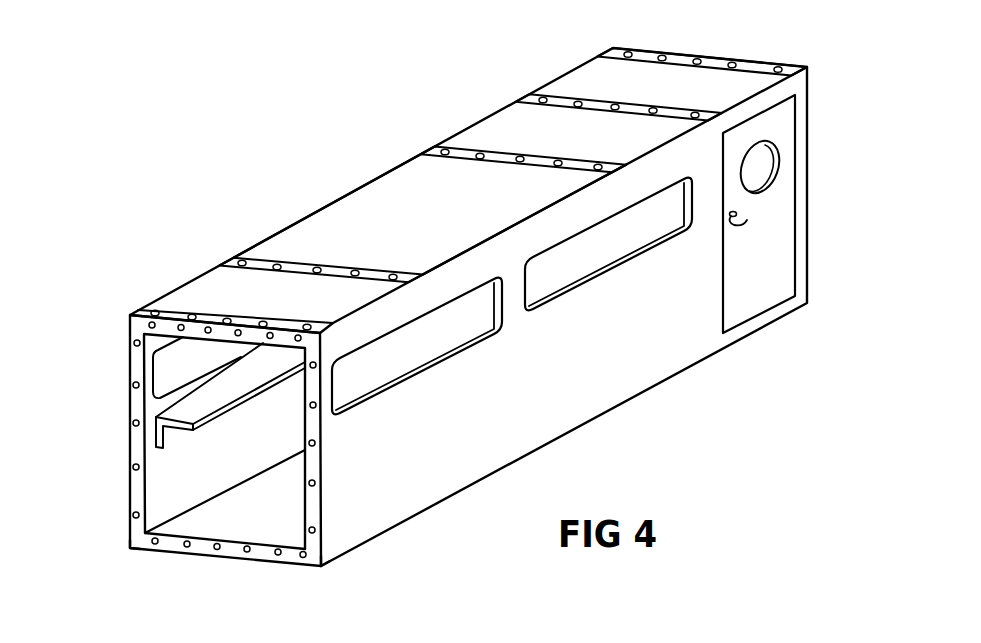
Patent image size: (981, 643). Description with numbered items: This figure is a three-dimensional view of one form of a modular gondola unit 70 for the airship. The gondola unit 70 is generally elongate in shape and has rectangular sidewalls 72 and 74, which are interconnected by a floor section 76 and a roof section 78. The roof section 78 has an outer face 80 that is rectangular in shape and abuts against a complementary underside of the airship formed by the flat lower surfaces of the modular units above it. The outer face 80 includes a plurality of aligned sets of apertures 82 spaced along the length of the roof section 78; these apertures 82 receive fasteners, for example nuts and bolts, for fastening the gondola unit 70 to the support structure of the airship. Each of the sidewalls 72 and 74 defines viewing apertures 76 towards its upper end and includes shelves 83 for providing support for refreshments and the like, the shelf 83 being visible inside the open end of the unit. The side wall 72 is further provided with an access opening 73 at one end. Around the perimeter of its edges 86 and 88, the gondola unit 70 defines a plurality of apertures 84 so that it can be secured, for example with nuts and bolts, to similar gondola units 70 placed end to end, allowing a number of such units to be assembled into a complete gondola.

The modular gondola unit 70 is at (331, 119).
The sidewall 72 is at (453, 465).
The access opening 73 is at (752, 263).
The sidewall 74 is at (153, 473).
The viewing apertures 76 is at (178, 358).
The roof section 78 is at (325, 247).
The outer face 80 is at (410, 182).
The aligned sets of apertures 82 is at (395, 274).
The shelves 83 is at (237, 390).
The apertures 84 is at (132, 388).
The edge 86 is at (133, 530).
The edge 88 is at (815, 92).